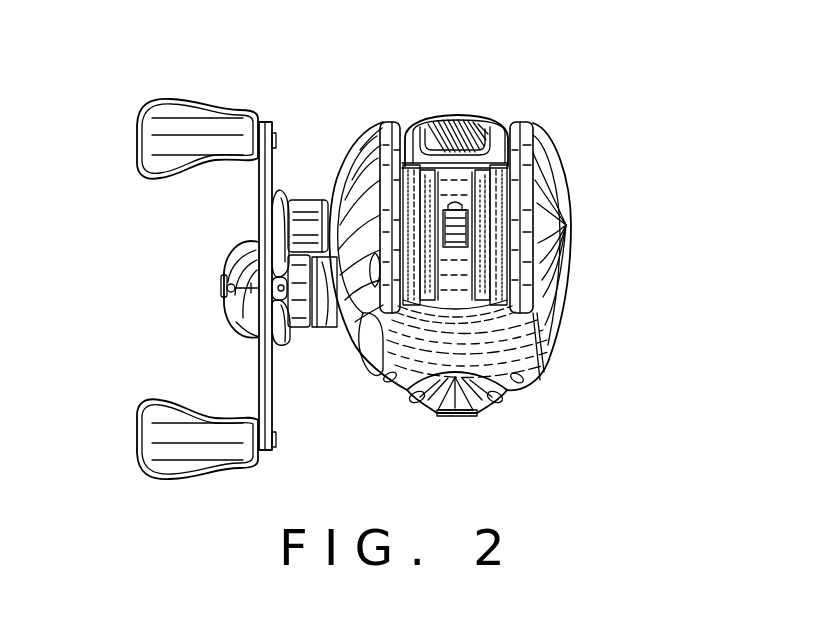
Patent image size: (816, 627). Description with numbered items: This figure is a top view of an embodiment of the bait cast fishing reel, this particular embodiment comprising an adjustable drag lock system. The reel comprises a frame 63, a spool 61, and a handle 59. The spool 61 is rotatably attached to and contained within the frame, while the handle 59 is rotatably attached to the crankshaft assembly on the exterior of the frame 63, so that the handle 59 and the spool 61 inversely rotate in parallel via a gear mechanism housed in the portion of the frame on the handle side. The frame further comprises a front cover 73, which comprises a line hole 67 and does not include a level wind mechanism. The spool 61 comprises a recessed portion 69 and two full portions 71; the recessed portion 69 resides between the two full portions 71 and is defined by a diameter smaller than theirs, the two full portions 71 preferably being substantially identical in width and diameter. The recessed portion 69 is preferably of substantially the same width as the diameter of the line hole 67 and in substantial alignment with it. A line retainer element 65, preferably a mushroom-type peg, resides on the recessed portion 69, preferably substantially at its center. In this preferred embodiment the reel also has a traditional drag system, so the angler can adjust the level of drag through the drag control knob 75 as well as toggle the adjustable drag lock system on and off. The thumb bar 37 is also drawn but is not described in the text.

The handle 59 is at (265, 100).
The drag control knob 75 is at (285, 187).
The frame 63 is at (352, 183).
The spool 61 is at (435, 238).
The line retainer element 65 is at (453, 203).
The thumb bar 37 is at (474, 133).
The recessed portion 69 is at (458, 228).
The full portions 71 is at (423, 267).
The front cover 73 is at (417, 357).
The line hole 67 is at (463, 420).